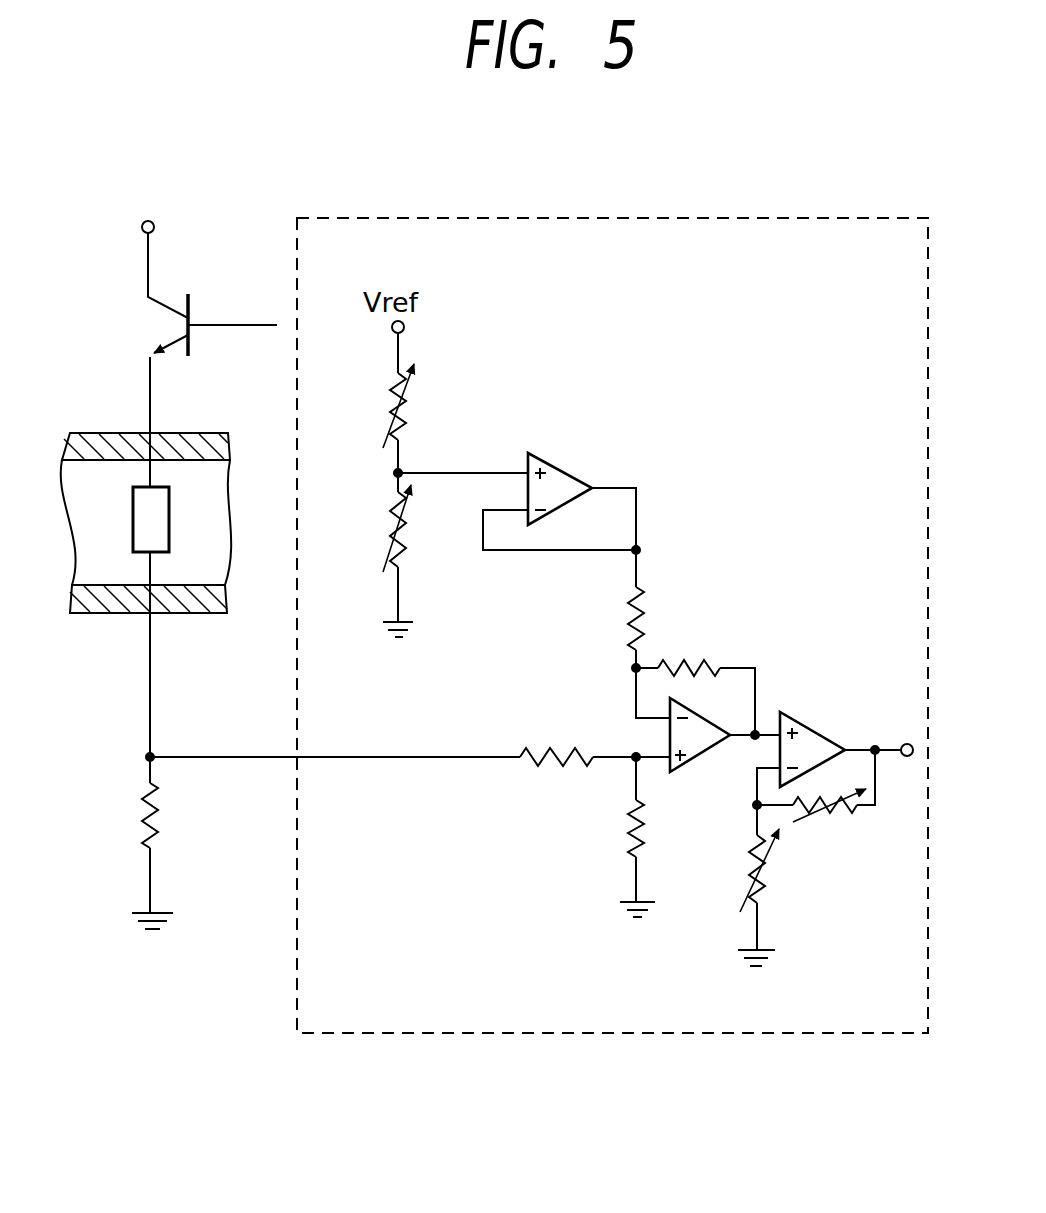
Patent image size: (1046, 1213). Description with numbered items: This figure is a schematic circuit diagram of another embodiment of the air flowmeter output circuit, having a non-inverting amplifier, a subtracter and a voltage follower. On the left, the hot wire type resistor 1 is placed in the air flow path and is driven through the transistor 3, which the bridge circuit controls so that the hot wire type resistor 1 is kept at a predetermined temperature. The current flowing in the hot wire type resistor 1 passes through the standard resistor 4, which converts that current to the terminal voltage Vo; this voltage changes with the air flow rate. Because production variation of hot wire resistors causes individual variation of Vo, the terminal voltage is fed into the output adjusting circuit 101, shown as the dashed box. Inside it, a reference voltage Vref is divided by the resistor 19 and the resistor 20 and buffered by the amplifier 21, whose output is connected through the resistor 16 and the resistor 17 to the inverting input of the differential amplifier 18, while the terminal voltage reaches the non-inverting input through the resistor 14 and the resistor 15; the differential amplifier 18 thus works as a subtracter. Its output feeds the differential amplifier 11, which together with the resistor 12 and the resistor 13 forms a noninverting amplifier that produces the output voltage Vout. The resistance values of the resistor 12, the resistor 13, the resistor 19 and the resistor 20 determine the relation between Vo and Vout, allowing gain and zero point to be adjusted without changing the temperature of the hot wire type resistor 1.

The hot wire type resistor 1 is at (169, 520).
The transistor 3 is at (167, 300).
The standard resistor 4 is at (158, 790).
The differential amplifier 11 is at (813, 723).
The resistor 12 is at (748, 857).
The resistor 13 is at (840, 812).
The resistor 14 is at (567, 750).
The resistor 15 is at (630, 826).
The resistor 16 is at (647, 603).
The resistor 17 is at (693, 658).
The differential amplifier 18 is at (700, 762).
The resistor 19 is at (405, 408).
The resistor 20 is at (390, 528).
The amplifier 21 is at (565, 463).
The output adjusting circuit 101 is at (564, 218).